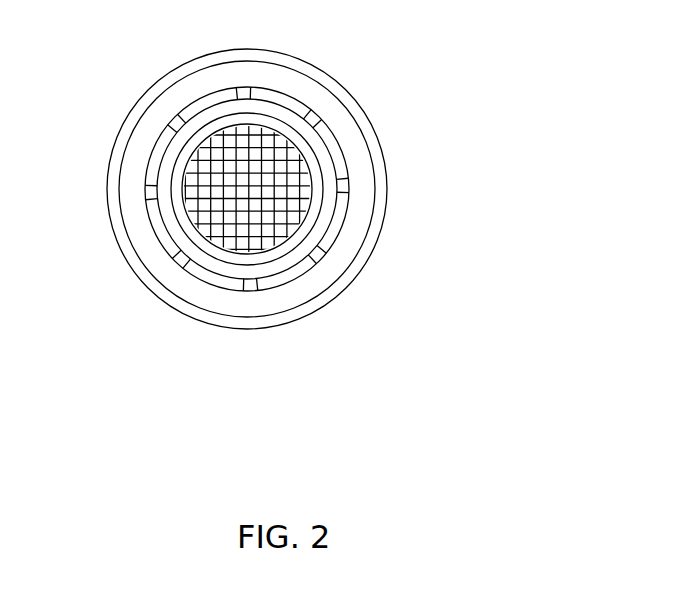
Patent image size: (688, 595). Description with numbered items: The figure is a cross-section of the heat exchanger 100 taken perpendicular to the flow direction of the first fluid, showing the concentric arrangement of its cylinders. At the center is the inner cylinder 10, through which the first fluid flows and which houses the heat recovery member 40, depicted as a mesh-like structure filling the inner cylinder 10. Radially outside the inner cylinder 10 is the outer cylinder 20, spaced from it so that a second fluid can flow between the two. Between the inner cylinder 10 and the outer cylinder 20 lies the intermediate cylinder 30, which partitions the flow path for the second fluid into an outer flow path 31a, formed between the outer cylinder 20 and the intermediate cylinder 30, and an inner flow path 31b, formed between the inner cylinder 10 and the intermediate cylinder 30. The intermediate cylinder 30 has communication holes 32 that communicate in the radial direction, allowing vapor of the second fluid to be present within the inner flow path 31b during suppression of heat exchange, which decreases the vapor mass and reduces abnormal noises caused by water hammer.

The heat exchanger 100 is at (279, 266).
The inner cylinder 10 is at (318, 204).
The outer cylinder 20 is at (343, 283).
The intermediate cylinder 30 is at (277, 199).
The outer flow path 31a is at (240, 300).
The inner flow path 31b is at (283, 263).
The communication holes 32 is at (180, 258).
The heat recovery member 40 is at (278, 170).